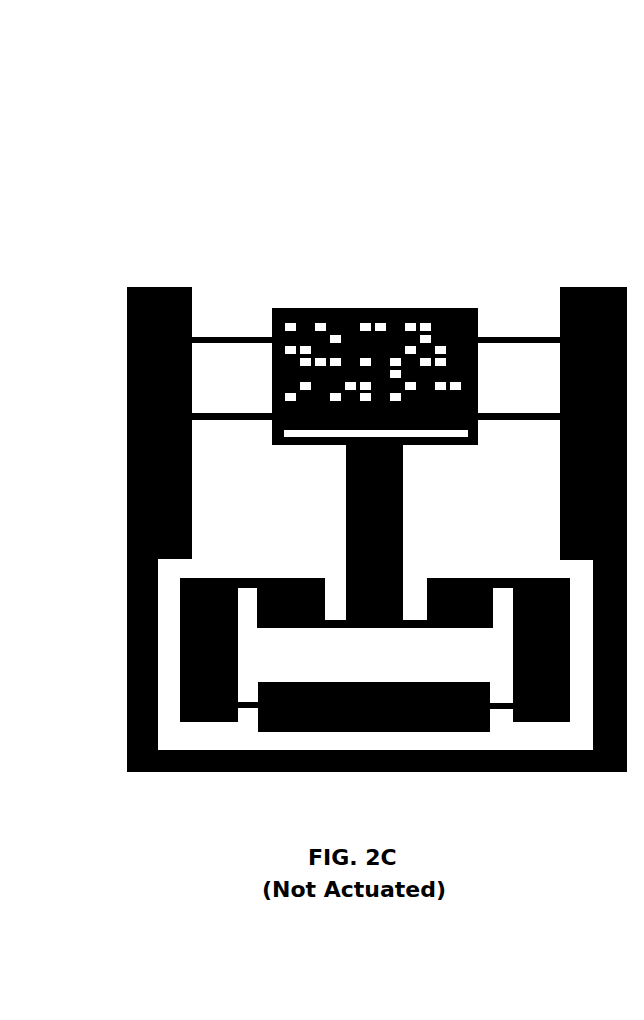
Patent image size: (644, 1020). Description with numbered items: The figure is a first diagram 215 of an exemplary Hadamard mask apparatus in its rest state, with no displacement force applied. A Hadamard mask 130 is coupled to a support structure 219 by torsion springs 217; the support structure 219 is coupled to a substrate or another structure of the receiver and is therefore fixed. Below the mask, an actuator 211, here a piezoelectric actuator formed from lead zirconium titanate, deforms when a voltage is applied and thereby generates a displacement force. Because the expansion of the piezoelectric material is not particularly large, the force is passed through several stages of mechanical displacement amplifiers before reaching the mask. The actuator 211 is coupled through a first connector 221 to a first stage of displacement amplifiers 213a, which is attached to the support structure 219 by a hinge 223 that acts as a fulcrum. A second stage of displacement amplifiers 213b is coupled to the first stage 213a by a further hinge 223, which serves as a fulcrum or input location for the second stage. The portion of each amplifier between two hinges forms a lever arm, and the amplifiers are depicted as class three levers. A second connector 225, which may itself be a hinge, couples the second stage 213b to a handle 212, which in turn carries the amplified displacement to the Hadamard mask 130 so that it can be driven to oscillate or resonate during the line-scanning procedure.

The first diagram 215 is at (108, 48).
The Hadamard mask 130 is at (381, 306).
The torsion spring 217 is at (532, 338).
The support structure 219 is at (590, 286).
The handle 212 is at (356, 493).
The first stage of displacement amplifiers 213a is at (196, 634).
The second stage of displacement amplifiers 213b is at (468, 612).
The hinge 223 is at (248, 578).
The second connector 225 is at (416, 624).
The first connector 221 is at (248, 709).
The actuator 211 is at (345, 733).